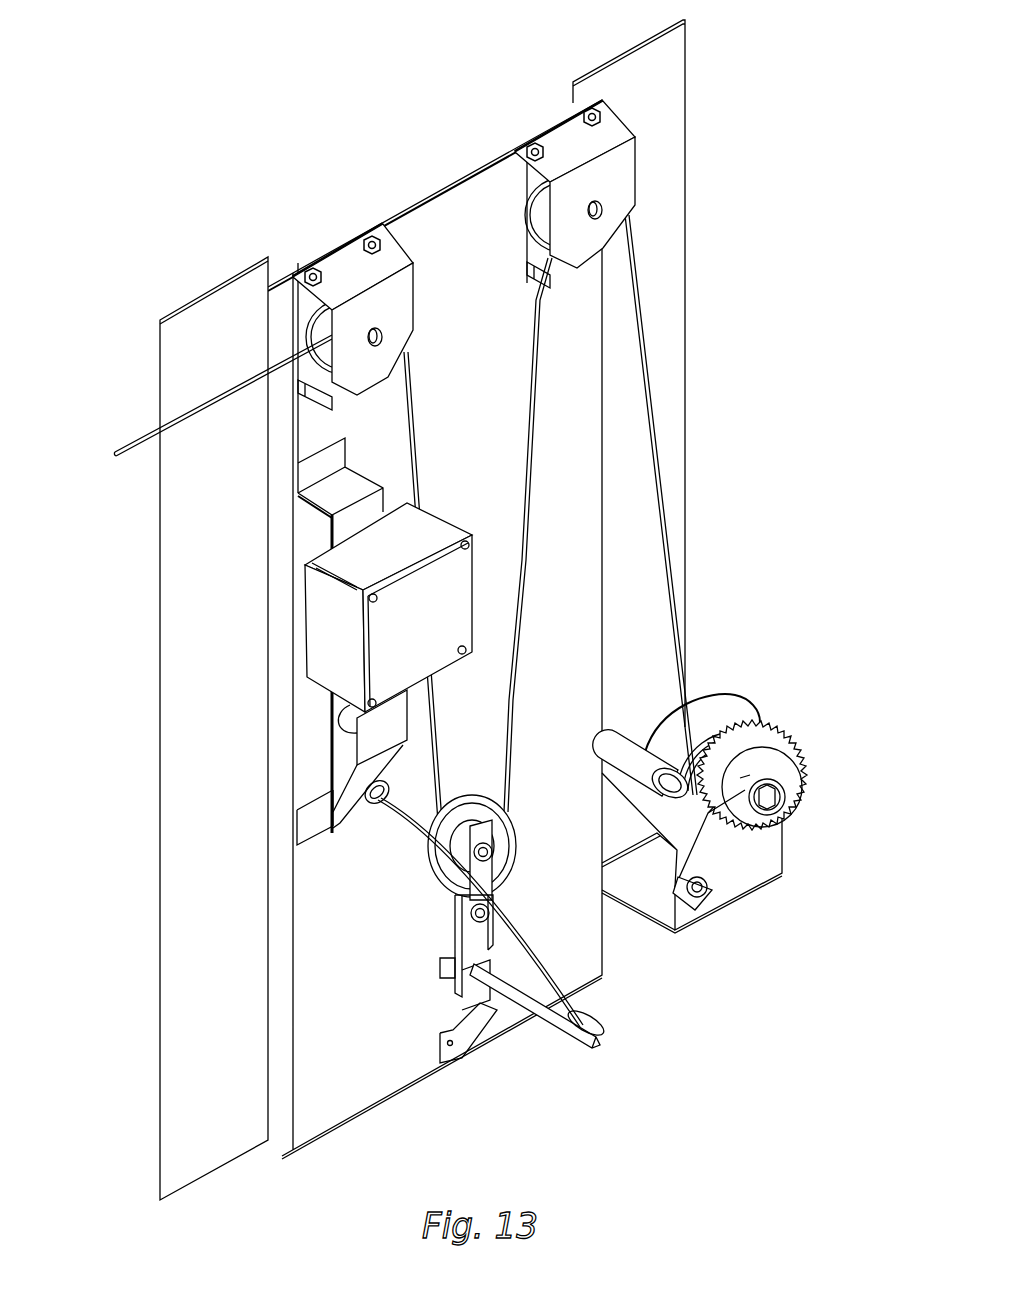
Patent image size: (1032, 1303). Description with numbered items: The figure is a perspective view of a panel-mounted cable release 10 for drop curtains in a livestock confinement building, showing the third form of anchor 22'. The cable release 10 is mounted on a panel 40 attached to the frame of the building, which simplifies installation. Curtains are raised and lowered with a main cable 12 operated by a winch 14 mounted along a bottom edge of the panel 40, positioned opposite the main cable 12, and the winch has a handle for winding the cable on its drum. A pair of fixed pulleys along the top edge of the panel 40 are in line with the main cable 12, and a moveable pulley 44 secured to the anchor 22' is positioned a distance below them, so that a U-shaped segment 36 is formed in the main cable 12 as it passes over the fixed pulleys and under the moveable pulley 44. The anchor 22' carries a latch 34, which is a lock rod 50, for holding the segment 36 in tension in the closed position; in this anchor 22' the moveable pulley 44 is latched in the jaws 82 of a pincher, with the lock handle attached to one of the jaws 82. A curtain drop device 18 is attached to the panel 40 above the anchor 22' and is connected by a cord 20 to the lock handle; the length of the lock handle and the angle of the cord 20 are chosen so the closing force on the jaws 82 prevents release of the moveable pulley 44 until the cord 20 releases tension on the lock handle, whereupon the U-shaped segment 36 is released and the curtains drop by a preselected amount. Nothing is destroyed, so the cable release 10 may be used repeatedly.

The cable release 10 is at (484, 502).
The main cable 12 is at (137, 432).
The winch 14 is at (797, 770).
The curtain drop device 18 is at (308, 667).
The cord 20 is at (410, 832).
The anchor 22' is at (529, 861).
The latch 34 is at (440, 1000).
The U-shaped segment of cable 36 is at (527, 423).
The panel 40 is at (675, 222).
The moveable pulley 44 is at (507, 813).
The lock rod 50 is at (540, 1046).
The jaws 82 is at (477, 960).